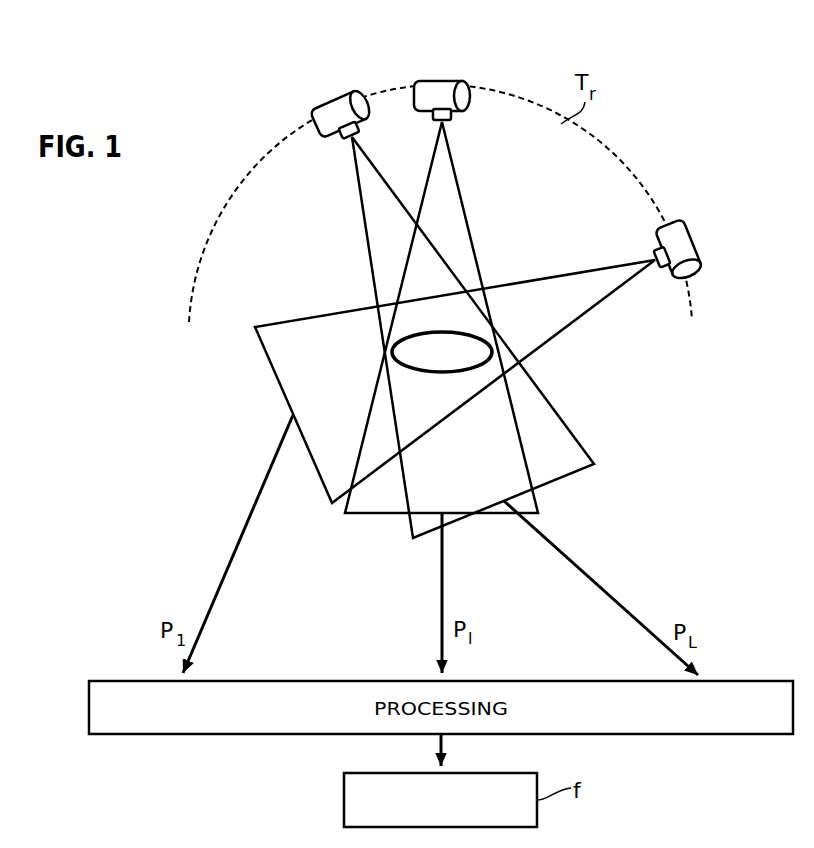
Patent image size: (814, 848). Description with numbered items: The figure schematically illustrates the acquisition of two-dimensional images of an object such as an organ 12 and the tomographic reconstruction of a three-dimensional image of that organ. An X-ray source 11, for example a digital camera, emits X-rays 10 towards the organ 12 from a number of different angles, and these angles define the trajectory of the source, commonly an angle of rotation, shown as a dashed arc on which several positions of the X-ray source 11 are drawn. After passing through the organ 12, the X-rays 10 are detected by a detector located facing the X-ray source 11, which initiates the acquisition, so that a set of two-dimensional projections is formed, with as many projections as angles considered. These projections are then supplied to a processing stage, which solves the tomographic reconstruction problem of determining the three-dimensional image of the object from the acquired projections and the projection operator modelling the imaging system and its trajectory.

The X-rays 10 is at (367, 245).
The X-ray source 11 is at (345, 117).
The organ 12 is at (432, 353).